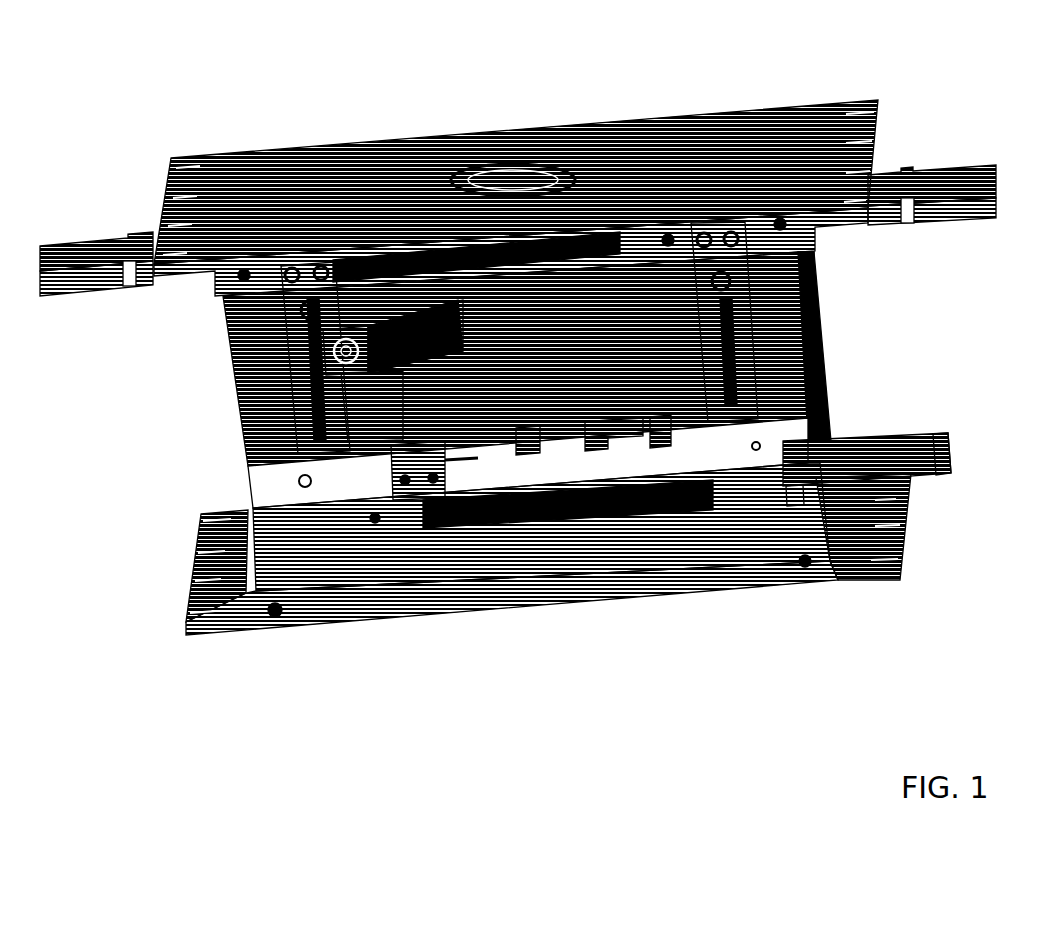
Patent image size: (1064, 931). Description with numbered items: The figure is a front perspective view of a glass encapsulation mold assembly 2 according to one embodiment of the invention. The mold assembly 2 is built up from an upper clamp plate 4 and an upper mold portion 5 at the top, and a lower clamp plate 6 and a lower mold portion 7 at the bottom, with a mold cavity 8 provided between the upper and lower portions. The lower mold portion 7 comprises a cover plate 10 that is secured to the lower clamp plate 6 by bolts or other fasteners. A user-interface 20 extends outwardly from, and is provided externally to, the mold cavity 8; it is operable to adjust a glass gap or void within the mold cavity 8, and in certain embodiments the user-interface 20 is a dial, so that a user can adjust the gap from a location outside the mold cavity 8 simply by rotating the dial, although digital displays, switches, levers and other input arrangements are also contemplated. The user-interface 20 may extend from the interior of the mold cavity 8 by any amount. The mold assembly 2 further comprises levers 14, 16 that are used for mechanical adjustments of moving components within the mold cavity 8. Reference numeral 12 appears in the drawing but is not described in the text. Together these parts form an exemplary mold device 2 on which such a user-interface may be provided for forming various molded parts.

The glass encapsulation mold assembly 2 is at (548, 390).
The upper clamp plate 4 is at (653, 119).
The side support arm 12 is at (934, 177).
The upper mold portion 5 is at (826, 252).
The mold cavity 8 is at (770, 305).
The cover plate 10 is at (740, 421).
The lower mold portion 7 is at (976, 404).
The lever 14 is at (916, 446).
The lower clamp plate 6 is at (772, 567).
The lever 16 is at (522, 441).
The user-interface 20 is at (362, 357).